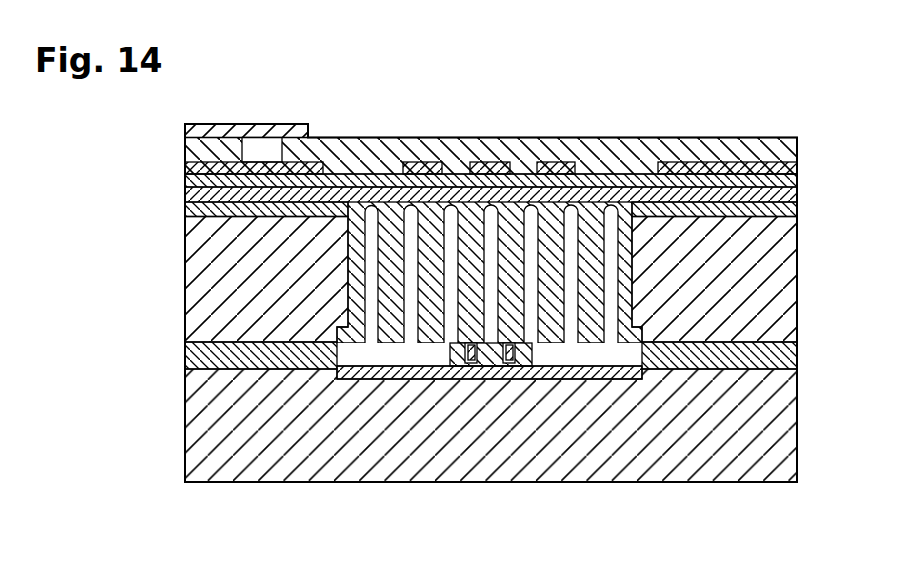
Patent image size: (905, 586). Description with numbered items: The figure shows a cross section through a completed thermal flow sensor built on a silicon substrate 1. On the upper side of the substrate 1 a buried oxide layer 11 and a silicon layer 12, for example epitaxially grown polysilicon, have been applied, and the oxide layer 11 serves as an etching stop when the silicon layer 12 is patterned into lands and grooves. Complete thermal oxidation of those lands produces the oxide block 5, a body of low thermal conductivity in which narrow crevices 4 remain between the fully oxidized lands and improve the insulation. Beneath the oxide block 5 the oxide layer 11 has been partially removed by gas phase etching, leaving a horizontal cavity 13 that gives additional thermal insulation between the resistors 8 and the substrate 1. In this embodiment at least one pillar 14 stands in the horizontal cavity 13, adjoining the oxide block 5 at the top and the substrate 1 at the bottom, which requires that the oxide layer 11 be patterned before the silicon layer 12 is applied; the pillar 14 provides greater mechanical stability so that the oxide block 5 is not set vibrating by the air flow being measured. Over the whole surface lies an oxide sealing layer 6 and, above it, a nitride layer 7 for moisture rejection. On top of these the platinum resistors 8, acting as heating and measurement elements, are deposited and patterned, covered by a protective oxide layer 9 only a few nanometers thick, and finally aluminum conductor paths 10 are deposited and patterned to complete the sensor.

The silicon substrate 1 is at (787, 437).
The crevice 4 is at (610, 200).
The oxide block 5 is at (397, 203).
The oxide sealing layer 6 is at (792, 196).
The nitride layer 7 is at (792, 178).
The resistors 8 is at (495, 165).
The protective oxide layer 9 is at (357, 160).
The aluminum conductor paths 10 is at (255, 131).
The oxide layer 11 is at (787, 357).
The silicon layer 12 is at (788, 303).
The horizontal cavity 13 is at (392, 355).
The pillar 14 is at (503, 347).